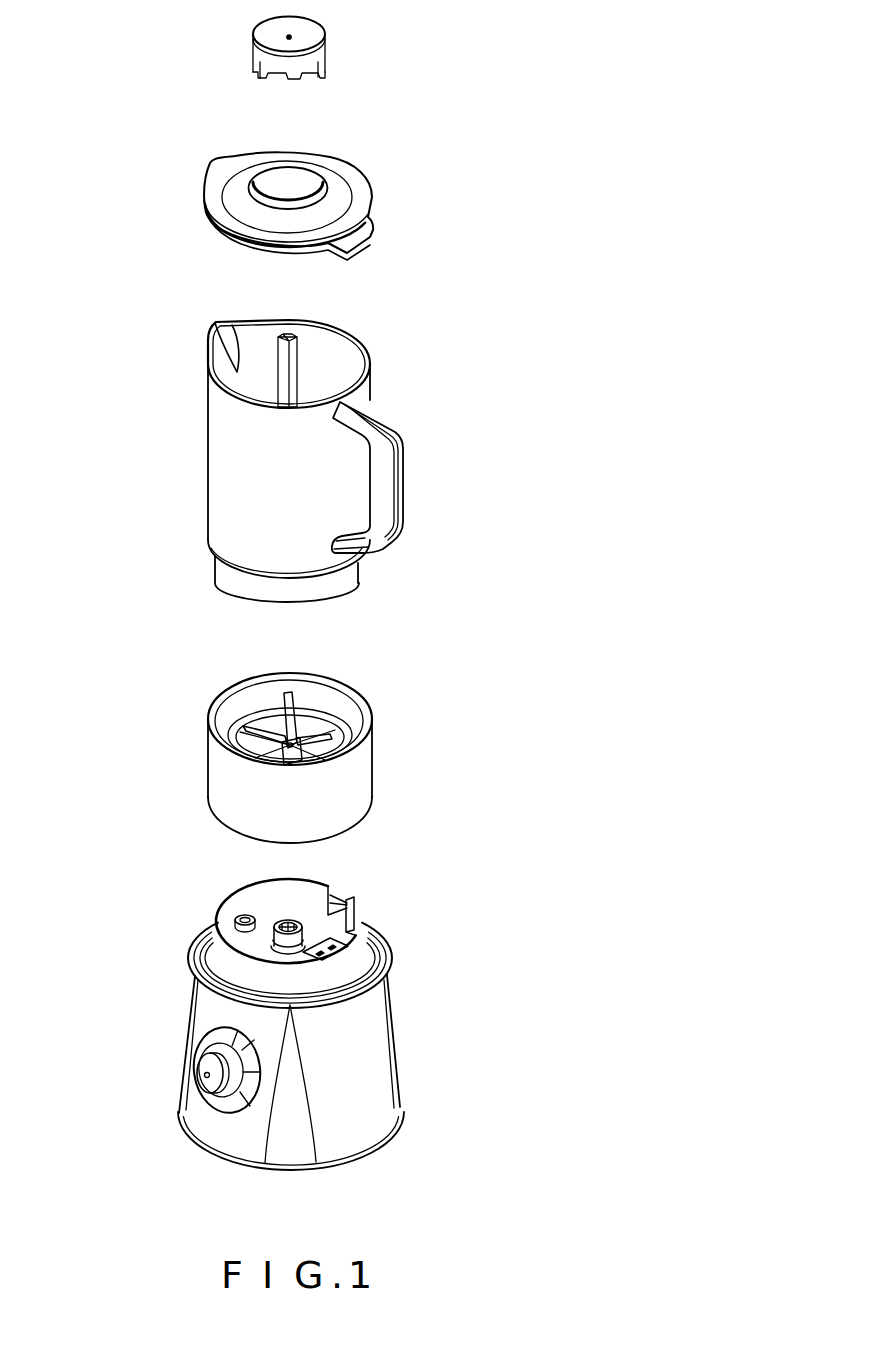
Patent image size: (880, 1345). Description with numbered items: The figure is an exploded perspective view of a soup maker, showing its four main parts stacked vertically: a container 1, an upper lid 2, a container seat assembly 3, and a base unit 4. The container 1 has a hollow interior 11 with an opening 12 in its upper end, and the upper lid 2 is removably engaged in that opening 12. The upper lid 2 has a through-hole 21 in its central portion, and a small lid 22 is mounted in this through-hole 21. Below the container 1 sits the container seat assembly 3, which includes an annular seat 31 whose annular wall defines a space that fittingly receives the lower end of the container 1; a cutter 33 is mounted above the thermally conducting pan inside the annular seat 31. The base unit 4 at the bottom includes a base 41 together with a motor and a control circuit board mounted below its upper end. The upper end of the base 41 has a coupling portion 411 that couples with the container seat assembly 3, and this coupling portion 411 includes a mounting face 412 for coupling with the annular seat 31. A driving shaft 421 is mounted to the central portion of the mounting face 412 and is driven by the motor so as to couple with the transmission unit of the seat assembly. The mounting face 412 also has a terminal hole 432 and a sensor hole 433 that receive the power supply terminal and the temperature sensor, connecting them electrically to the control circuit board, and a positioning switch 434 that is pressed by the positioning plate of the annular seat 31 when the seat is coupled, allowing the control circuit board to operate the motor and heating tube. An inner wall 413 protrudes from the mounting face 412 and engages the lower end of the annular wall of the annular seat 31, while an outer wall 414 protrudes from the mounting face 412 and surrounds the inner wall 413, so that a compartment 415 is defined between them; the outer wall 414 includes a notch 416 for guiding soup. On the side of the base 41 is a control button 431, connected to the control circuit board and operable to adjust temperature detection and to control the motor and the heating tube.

The container 1 is at (360, 461).
The hollow interior 11 is at (307, 388).
The opening 12 is at (330, 352).
The upper lid 2 is at (358, 193).
The through-hole 21 is at (293, 188).
The small lid 22 is at (337, 53).
The container seat assembly 3 is at (360, 755).
The annular seat 31 is at (352, 763).
The cutter 33 is at (312, 732).
The base unit 4 is at (291, 987).
The base 41 is at (373, 1078).
The coupling portion 411 is at (172, 913).
The mounting face 412 is at (294, 913).
The inner wall 413 is at (300, 890).
The outer wall 414 is at (383, 953).
The compartment 415 is at (380, 930).
The notch 416 is at (360, 909).
The driving shaft 421 is at (282, 922).
The control button 431 is at (197, 1072).
The terminal hole 432 is at (327, 952).
The sensor hole 433 is at (322, 962).
The positioning switch 434 is at (243, 915).